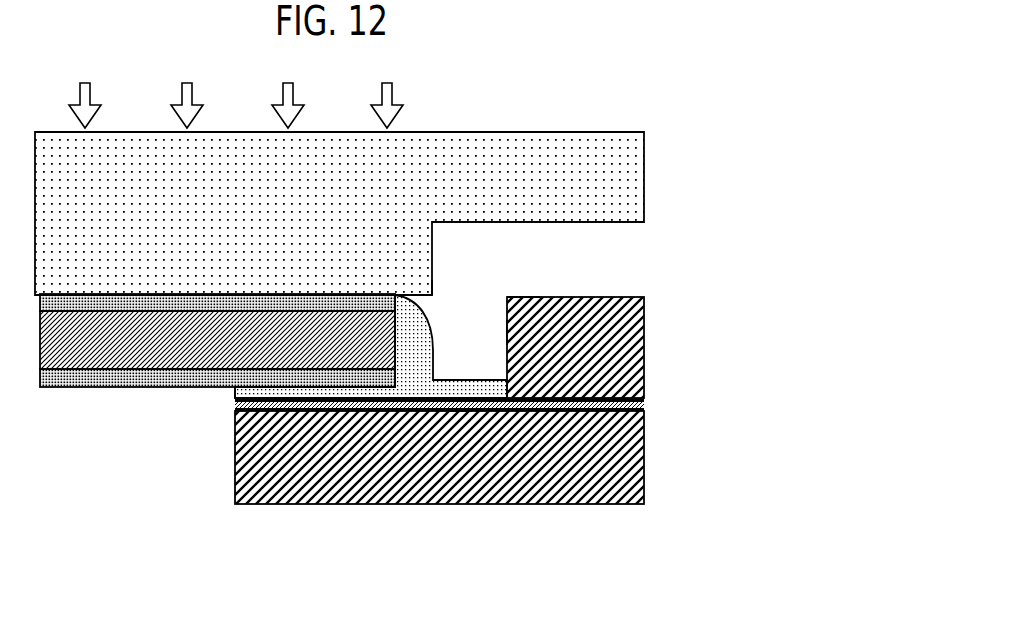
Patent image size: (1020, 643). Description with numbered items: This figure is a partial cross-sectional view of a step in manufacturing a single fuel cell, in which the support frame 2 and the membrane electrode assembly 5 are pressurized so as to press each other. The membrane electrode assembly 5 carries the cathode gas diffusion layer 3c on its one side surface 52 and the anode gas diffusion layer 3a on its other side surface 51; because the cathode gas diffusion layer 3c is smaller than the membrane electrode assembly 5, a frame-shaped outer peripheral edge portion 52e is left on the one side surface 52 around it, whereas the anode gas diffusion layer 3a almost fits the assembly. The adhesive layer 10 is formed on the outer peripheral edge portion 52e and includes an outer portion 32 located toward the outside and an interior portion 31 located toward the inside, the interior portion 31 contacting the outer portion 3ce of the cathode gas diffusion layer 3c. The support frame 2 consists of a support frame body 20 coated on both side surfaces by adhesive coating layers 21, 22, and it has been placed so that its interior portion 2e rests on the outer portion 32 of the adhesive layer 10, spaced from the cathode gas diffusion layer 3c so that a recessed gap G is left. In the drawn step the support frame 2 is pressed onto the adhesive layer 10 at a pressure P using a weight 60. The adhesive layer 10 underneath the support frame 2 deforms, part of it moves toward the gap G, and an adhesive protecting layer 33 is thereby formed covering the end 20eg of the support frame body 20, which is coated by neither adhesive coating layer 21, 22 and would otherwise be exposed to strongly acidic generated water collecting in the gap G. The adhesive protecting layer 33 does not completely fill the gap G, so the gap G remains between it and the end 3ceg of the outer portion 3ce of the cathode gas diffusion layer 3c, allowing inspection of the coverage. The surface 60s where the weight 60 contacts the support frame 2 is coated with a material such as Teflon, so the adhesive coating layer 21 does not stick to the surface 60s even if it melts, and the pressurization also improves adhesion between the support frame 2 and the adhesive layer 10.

The pressure P is at (236, 92).
The weight 60 is at (623, 132).
The surface of the weight 60s is at (352, 299).
The end of the interior portion of the support frame body 20eg is at (434, 294).
The support frame 2 is at (217, 398).
The adhesive coating layer 21 is at (133, 296).
The support frame body 20 is at (110, 343).
The adhesive coating layer 22 is at (185, 463).
The interior portion of the support frame 2e is at (312, 389).
The adhesive protecting layer 33 is at (428, 330).
The gap G is at (444, 352).
The outer peripheral edge portion 52e is at (442, 397).
The cathode gas diffusion layer 3c is at (643, 296).
The outer portion of the cathode gas diffusion layer 3ce is at (525, 296).
The end of the outer portion of the cathode gas diffusion layer 3ceg is at (507, 333).
The anode gas diffusion layer 3a is at (600, 487).
The membrane electrode assembly 5 is at (487, 386).
The other side surface of the membrane electrode assembly 51 is at (567, 412).
The one side surface of the membrane electrode assembly 52 is at (592, 398).
The adhesive layer 10 is at (396, 482).
The interior portion of the adhesive layer 31 is at (460, 412).
The outer portion of the adhesive layer 32 is at (332, 390).